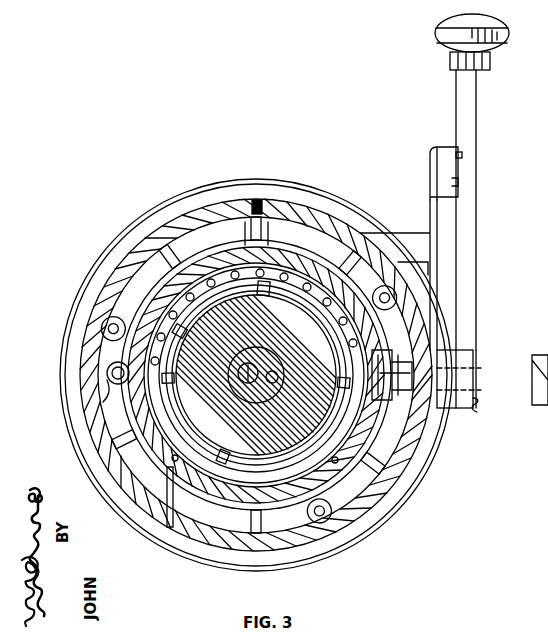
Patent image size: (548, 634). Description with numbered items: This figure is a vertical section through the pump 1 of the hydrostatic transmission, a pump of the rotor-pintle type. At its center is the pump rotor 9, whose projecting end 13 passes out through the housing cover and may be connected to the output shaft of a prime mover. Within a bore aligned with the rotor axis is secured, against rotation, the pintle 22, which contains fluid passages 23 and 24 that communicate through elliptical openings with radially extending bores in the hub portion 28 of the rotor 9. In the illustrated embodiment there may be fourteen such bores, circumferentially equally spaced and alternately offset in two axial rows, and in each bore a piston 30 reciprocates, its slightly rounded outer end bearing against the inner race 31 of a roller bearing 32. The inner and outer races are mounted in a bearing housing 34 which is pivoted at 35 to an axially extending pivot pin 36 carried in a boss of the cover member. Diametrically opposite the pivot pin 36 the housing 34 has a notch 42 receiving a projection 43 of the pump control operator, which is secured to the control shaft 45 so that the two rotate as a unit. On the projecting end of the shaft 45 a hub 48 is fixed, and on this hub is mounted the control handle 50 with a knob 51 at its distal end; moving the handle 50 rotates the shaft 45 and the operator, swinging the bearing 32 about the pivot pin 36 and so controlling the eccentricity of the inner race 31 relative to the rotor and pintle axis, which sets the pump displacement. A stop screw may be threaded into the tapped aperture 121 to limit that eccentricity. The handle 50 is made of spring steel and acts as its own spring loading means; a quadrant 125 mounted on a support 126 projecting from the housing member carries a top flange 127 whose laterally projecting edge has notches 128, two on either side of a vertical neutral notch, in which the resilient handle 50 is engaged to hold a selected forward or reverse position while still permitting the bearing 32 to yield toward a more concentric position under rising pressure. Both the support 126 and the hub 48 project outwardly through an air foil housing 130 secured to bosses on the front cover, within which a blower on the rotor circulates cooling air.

The pump 1 is at (385, 432).
The pump rotor 9 is at (205, 360).
The projecting end of the rotor 13 is at (547, 414).
The pintle 22 is at (278, 395).
The fluid passage 23 is at (278, 375).
The fluid passage 24 is at (243, 382).
The hub portion of the rotor 28 is at (228, 318).
The piston 30 is at (266, 298).
The inner race 31 is at (294, 259).
The roller bearing 32 is at (314, 252).
The bearing housing 34 is at (322, 476).
The pivot 35 is at (124, 395).
The pivot pin 36 is at (118, 373).
The notch 42 is at (383, 352).
The projection 43 is at (386, 372).
The control shaft 45 is at (471, 399).
The hub 48 is at (490, 410).
The control handle 50 is at (470, 288).
The knob 51 is at (500, 46).
The tapped aperture 121 is at (258, 202).
The quadrant 125 is at (430, 170).
The support 126 is at (406, 240).
The top flange 127 is at (463, 186).
The notches 128 is at (462, 155).
The air foil housing 130 is at (398, 520).